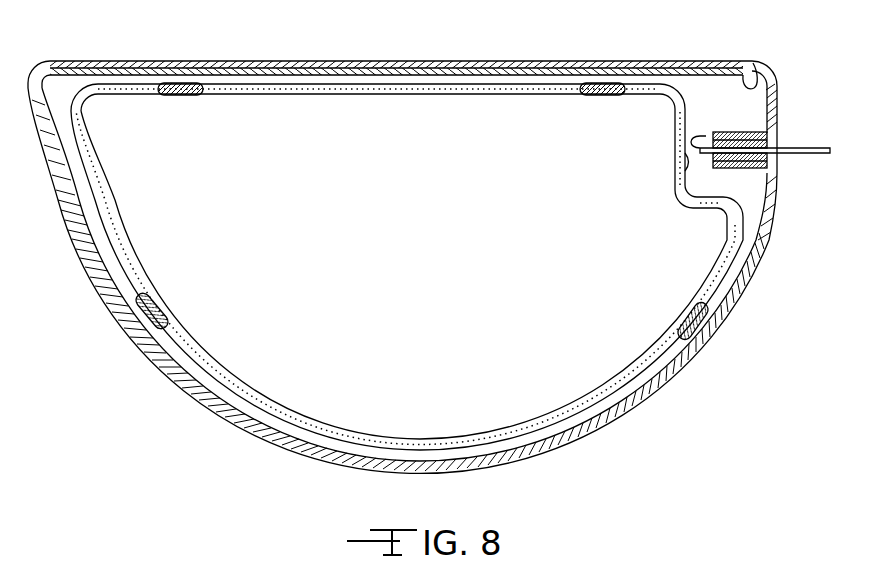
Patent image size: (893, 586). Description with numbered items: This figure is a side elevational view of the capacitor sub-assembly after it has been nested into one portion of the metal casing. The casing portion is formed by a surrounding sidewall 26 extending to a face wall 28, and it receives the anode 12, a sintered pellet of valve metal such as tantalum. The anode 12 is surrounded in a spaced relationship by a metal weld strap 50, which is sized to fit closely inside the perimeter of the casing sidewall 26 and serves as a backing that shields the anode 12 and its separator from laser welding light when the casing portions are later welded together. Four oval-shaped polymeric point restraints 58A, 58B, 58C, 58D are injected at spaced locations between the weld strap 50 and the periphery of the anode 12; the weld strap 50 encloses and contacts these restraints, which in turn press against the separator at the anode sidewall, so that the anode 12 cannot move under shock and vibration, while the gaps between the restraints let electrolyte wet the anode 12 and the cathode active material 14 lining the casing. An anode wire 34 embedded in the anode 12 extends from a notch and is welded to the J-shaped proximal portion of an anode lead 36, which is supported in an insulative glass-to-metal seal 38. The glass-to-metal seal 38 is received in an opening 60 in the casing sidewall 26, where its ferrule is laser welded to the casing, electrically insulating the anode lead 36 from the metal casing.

The anode 12 is at (363, 122).
The cathode active material 14 is at (686, 120).
The surrounding sidewall 26 is at (508, 62).
The face wall 28 is at (758, 96).
The anode wire 34 is at (684, 176).
The anode lead 36 is at (830, 148).
The glass-to-metal seal 38 is at (786, 140).
The weld strap 50 is at (748, 74).
The polymeric point restraint 58A is at (188, 96).
The polymeric point restraint 58B is at (162, 305).
The polymeric point restraint 58C is at (690, 312).
The polymeric point restraint 58D is at (602, 95).
The opening 60 is at (776, 165).